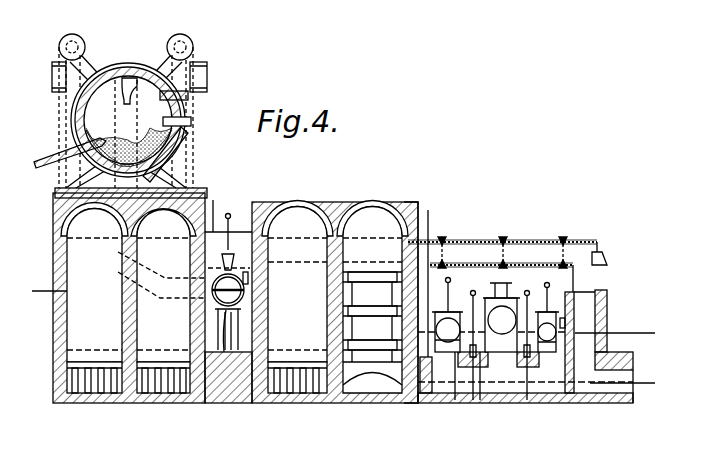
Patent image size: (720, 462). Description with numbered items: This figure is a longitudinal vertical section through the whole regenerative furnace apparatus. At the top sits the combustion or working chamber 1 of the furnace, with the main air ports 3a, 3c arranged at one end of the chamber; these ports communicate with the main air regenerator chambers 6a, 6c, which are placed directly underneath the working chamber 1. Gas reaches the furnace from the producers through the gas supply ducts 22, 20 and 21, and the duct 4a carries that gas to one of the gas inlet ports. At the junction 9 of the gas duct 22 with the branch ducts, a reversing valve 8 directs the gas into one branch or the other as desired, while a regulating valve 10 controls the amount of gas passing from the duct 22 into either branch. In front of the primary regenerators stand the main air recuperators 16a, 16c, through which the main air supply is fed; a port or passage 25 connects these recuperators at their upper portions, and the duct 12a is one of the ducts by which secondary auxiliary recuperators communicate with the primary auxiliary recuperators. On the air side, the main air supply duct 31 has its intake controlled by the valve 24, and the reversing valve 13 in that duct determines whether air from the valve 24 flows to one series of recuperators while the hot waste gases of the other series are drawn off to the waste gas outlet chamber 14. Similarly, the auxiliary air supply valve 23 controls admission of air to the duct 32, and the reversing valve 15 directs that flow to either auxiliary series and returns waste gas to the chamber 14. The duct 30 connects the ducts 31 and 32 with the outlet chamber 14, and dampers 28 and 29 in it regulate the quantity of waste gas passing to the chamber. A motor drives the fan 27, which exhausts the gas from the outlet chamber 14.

The combustion or working chamber 1 is at (128, 125).
The air port 3a is at (194, 50).
The air port 3c is at (90, 42).
The duct 4a is at (112, 136).
The main air regenerator chamber 6a is at (161, 301).
The main air regenerator chamber 6c is at (94, 298).
The reversing valve 8 is at (220, 345).
The junction 9 is at (214, 203).
The regulating valve 10 is at (232, 252).
The duct 12a is at (241, 400).
The reversing valve 13 is at (452, 325).
The waste gas outlet chamber 14 is at (501, 325).
The reversing valve 15 is at (560, 331).
The main air recuperator 16a is at (410, 210).
The main air recuperator 16c is at (296, 218).
The gas supply duct 20 is at (596, 305).
The gas supply duct 21 is at (525, 306).
The gas supply duct 22 is at (507, 264).
The auxiliary air supply valve 23 is at (545, 308).
The valve 24 is at (446, 308).
The port or passage 25 is at (374, 220).
The fan 27 is at (505, 283).
The damper 28 is at (455, 400).
The damper 29 is at (532, 400).
The duct 30 is at (480, 400).
The main air supply duct 31 is at (467, 346).
The duct 32 is at (560, 314).